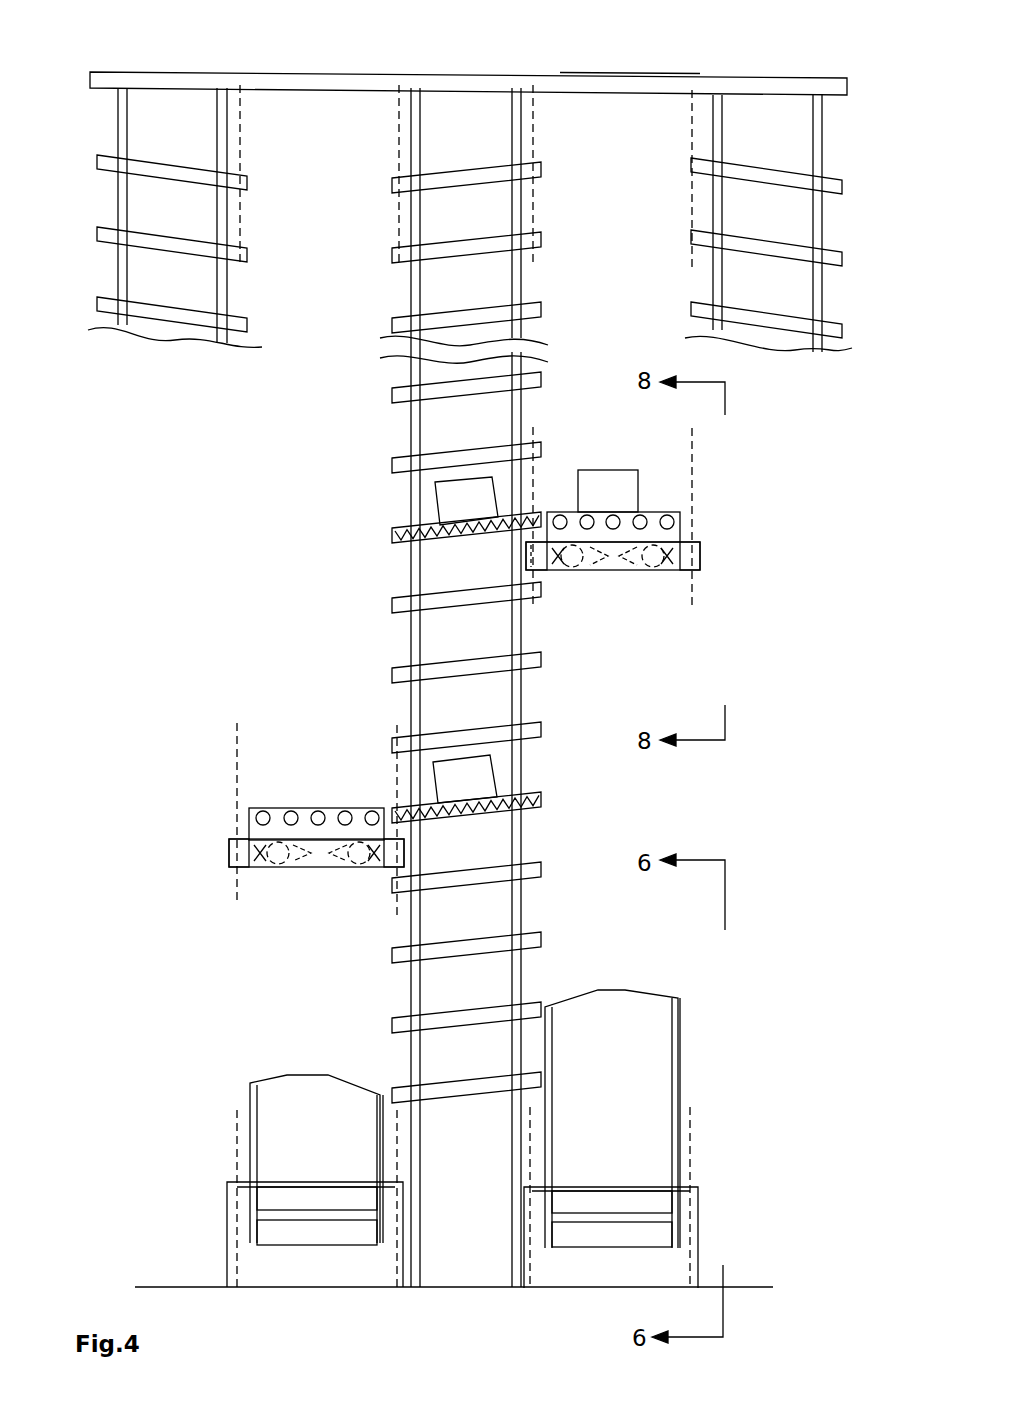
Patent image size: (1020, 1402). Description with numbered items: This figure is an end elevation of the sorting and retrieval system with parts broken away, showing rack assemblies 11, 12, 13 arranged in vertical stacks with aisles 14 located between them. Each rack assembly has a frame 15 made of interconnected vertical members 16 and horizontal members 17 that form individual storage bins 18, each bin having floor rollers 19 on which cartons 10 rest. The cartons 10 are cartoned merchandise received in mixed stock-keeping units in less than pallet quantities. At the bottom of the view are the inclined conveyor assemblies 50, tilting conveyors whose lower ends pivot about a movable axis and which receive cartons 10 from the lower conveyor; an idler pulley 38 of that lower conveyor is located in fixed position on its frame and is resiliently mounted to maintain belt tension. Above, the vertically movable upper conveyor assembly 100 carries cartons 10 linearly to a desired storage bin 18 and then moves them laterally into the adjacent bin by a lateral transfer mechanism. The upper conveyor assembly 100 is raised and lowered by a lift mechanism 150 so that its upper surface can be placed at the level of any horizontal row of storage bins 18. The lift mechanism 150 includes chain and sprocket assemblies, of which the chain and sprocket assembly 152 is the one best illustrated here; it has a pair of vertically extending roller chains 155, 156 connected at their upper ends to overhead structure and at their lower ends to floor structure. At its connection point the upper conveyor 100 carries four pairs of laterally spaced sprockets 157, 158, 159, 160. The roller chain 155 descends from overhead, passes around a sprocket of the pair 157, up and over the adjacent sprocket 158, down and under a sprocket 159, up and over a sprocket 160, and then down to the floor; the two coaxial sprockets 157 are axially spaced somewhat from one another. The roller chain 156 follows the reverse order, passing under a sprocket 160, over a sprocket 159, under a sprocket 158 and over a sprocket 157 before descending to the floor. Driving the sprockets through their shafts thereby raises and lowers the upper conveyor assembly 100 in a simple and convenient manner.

The cartons 10 is at (482, 510).
The rack assembly 11 is at (463, 194).
The rack assembly 12 is at (376, 489).
The rack assembly 13 is at (857, 305).
The aisles 14 is at (323, 292).
The frame 15 is at (338, 62).
The vertical members 16 is at (118, 128).
The horizontal members 17 is at (620, 75).
The storage bins 18 is at (172, 215).
The floor rollers 19 is at (490, 538).
The idler pulley 38 is at (312, 1248).
The inclined conveyor assembly 50 is at (272, 1111).
The upper conveyor assembly 100 is at (485, 721).
The lift mechanism 150 is at (670, 618).
The chain and sprocket assembly 152 is at (710, 613).
The roller chain 155 is at (535, 123).
The roller chain 156 is at (399, 150).
The sprockets 157 is at (540, 574).
The sprockets 158 is at (548, 570).
The sprockets 159 is at (650, 567).
The sprockets 160 is at (698, 587).